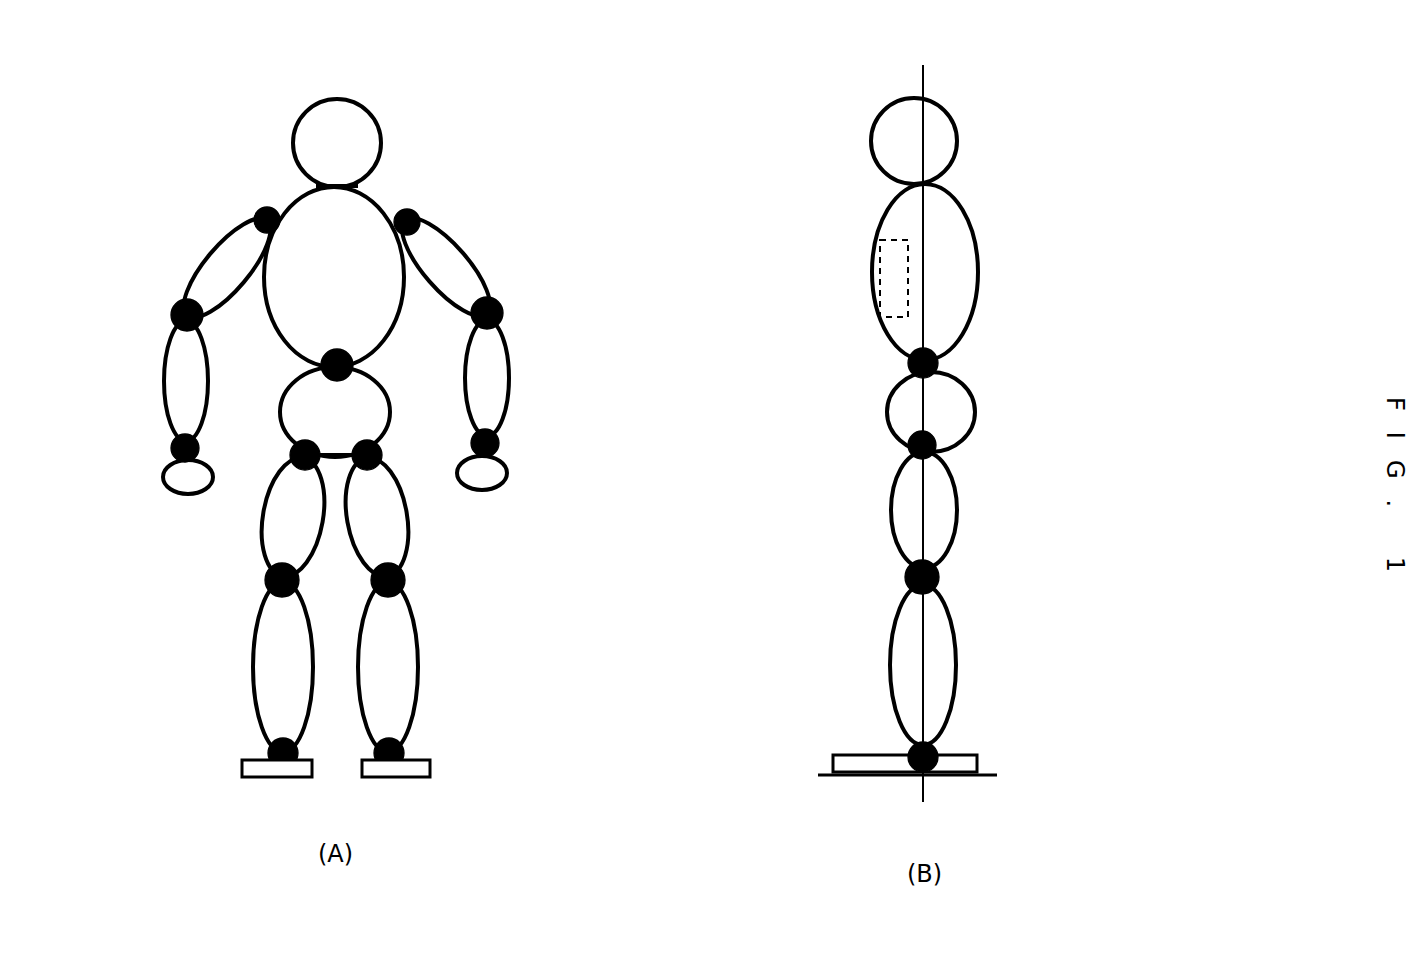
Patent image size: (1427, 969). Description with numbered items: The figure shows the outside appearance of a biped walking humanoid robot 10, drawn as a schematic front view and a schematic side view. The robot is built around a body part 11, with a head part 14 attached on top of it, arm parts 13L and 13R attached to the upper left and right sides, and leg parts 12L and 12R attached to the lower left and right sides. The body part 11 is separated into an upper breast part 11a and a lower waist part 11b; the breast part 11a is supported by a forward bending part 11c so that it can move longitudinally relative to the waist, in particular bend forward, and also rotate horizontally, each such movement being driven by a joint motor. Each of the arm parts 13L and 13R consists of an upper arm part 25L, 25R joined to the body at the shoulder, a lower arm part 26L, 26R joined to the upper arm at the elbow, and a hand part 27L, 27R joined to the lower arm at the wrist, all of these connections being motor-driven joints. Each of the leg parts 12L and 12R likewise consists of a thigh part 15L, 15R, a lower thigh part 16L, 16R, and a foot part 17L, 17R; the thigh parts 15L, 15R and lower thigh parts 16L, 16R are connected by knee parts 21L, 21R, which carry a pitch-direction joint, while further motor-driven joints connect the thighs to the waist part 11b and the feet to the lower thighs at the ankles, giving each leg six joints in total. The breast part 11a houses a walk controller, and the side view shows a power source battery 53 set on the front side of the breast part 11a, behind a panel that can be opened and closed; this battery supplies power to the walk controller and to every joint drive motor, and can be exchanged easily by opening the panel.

The biped walking humanoid robot 10 is at (518, 100).
The head part 14 is at (345, 120).
The body part 11 is at (599, 300).
The breast part 11a is at (383, 312).
The waist part 11b is at (382, 422).
The forward bending part 11c is at (322, 367).
The right arm part 13R is at (188, 257).
The left arm part 13L is at (477, 248).
The right upper arm part 25R is at (232, 247).
The left upper arm part 25L is at (442, 225).
The right lower arm part 26R is at (178, 393).
The left lower arm part 26L is at (495, 405).
The right hand part 27R is at (170, 475).
The left hand part 27L is at (500, 460).
The right leg part 12R is at (150, 512).
The left leg part 12L is at (538, 515).
The right thigh part 15R is at (277, 529).
The left thigh part 15L is at (398, 528).
The right knee part 21R is at (260, 588).
The left knee part 21L is at (410, 583).
The right lower thigh part 16R is at (268, 707).
The left lower thigh part 16L is at (408, 667).
The right foot part 17R is at (242, 768).
The left foot part 17L is at (430, 763).
The power source battery 53 is at (873, 263).